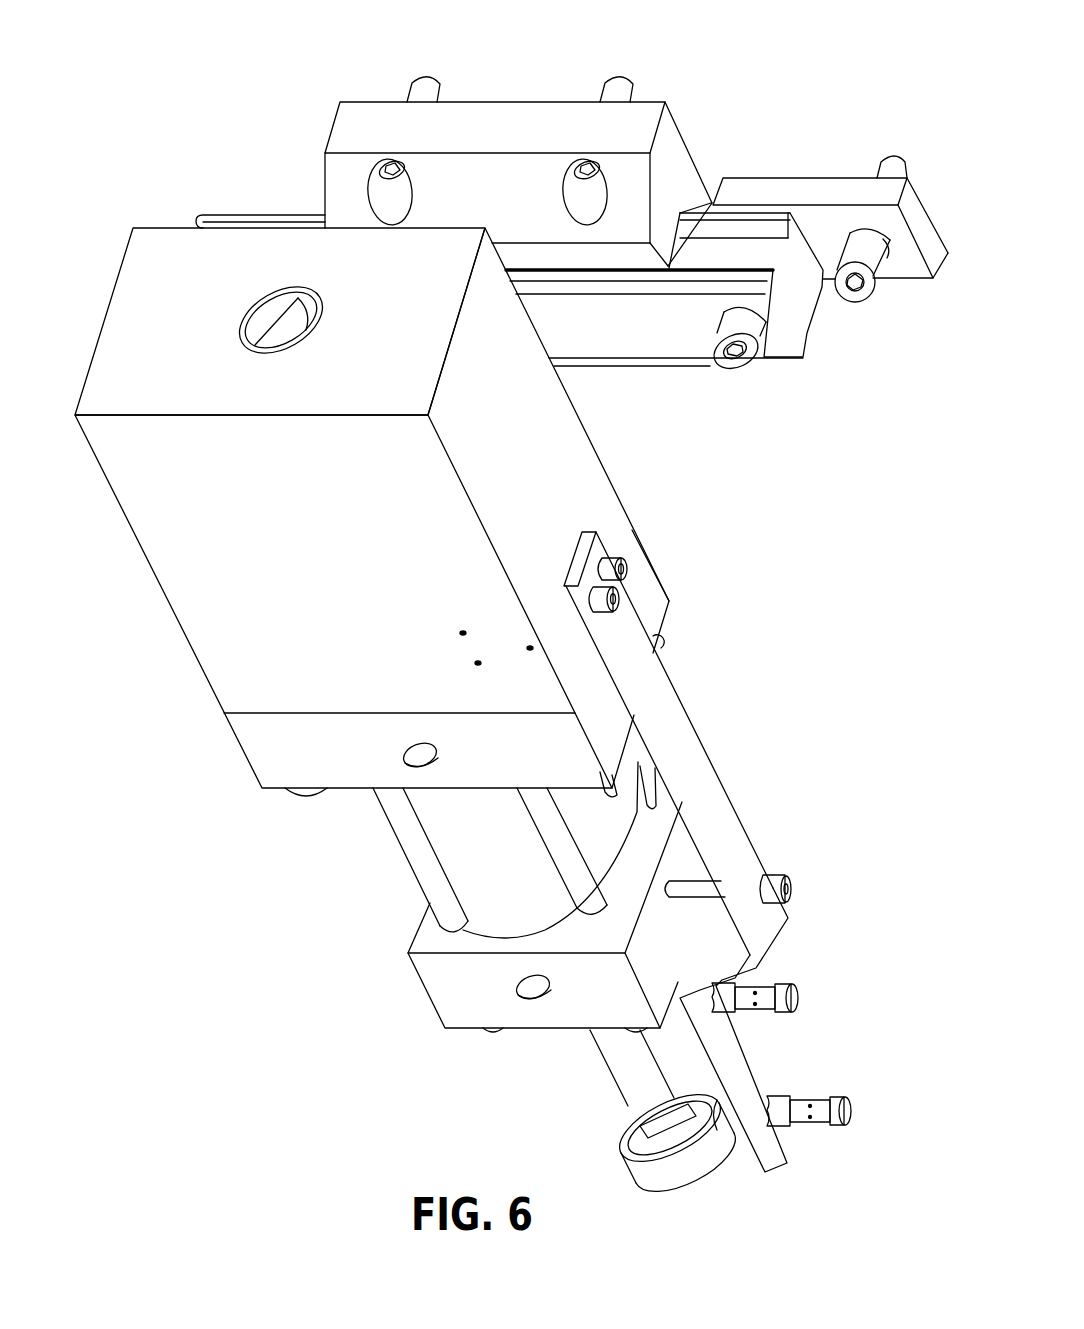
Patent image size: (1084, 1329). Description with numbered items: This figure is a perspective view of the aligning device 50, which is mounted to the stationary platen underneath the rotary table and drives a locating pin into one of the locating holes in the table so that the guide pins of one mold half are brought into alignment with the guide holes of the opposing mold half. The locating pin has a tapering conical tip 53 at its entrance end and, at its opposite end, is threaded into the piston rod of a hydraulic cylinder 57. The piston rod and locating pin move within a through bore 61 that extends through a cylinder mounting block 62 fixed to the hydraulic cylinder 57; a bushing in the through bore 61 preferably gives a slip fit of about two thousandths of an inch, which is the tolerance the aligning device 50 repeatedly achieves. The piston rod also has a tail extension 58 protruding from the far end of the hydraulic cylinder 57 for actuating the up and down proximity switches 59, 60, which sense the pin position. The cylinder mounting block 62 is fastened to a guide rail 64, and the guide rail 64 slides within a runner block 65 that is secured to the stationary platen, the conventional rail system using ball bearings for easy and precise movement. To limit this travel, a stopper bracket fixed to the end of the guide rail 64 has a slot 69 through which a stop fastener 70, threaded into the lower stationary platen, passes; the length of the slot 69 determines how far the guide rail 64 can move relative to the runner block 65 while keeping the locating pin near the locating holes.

The aligning device 50 is at (778, 638).
The tapering conical tip 53 is at (298, 300).
The hydraulic cylinder 57 is at (637, 835).
The tail extension 58 is at (610, 1077).
The up proximity switch 59 is at (795, 990).
The down proximity switch 60 is at (847, 1095).
The through bore 61 is at (242, 313).
The cylinder mounting block 62 is at (590, 435).
The guide rail 64 is at (795, 357).
The runner block 65 is at (687, 140).
The slot 69 is at (852, 233).
The stop fastener 70 is at (868, 297).